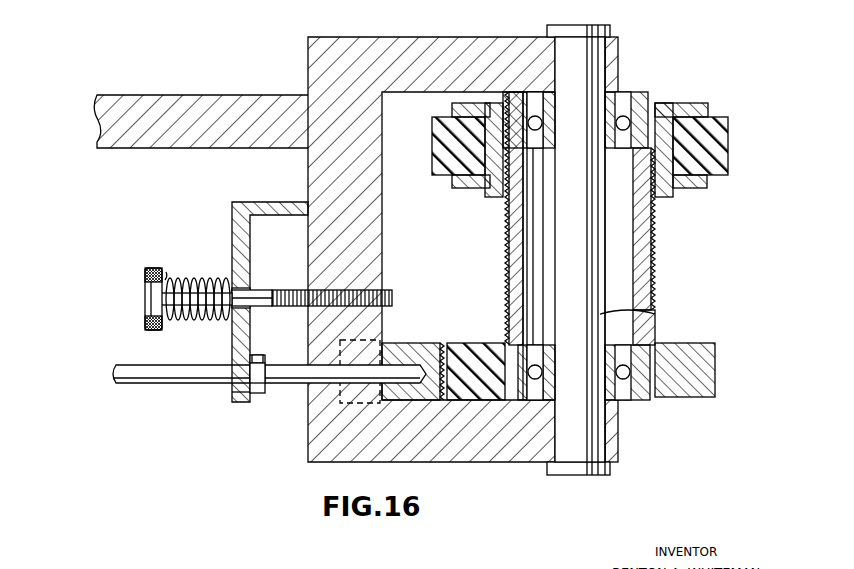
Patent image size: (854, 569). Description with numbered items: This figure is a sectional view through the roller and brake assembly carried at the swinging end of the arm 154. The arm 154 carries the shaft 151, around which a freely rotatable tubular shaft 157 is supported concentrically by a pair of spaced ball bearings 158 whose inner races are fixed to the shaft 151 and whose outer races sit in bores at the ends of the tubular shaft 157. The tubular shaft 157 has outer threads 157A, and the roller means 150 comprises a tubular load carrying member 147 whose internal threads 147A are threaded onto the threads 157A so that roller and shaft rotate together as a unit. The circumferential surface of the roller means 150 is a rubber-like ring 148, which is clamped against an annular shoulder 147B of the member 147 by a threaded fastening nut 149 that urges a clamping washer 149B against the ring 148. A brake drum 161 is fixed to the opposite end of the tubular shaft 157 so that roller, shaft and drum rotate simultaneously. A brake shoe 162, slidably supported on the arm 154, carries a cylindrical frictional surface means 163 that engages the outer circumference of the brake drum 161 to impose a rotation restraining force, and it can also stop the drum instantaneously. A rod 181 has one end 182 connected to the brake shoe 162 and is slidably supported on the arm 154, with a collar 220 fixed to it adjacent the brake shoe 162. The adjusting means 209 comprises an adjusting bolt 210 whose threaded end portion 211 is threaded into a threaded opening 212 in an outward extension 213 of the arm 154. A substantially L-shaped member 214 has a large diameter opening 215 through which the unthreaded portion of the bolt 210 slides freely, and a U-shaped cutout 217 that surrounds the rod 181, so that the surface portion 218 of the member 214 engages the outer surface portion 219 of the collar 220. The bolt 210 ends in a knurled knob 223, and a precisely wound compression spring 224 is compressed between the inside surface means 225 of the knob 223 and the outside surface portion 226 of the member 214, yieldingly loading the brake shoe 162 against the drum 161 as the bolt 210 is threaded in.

The arm 154 is at (178, 95).
The outward extension 213 is at (308, 181).
The shaft 151 is at (640, 313).
The tubular shaft 157 is at (648, 249).
The outer threads 157A is at (652, 279).
The internal threads 147A is at (530, 94).
The ball bearing 158 is at (632, 94).
The brake drum 161 is at (716, 366).
The tubular load carrying member 147 is at (491, 226).
The annular shoulder 147B is at (453, 110).
The clamping washer 149B is at (453, 184).
The roller means 150 is at (698, 103).
The rubber-like ring 148 is at (728, 156).
The threaded fastening nut 149 is at (700, 198).
The rod end 182 is at (416, 364).
The cylindrical frictional surface means 163 is at (458, 347).
The brake shoe 162 is at (447, 348).
The rod 181 is at (150, 381).
The adjusting means 209 is at (231, 314).
The L-shaped member 214 is at (232, 206).
The cylindrical large diameter opening 215 is at (247, 289).
The cutout 217 is at (238, 393).
The collar 220 is at (260, 394).
The surface portion 218 is at (258, 359).
The outer surface portion 219 is at (250, 366).
The threaded opening 212 is at (326, 290).
The threaded end portion 211 is at (303, 307).
The outside surface portion 226 is at (226, 322).
The adjusting screw or bolt 210 is at (212, 289).
The inside surface means 225 is at (166, 278).
The knurled knob 223 is at (145, 299).
The compression spring 224 is at (183, 326).